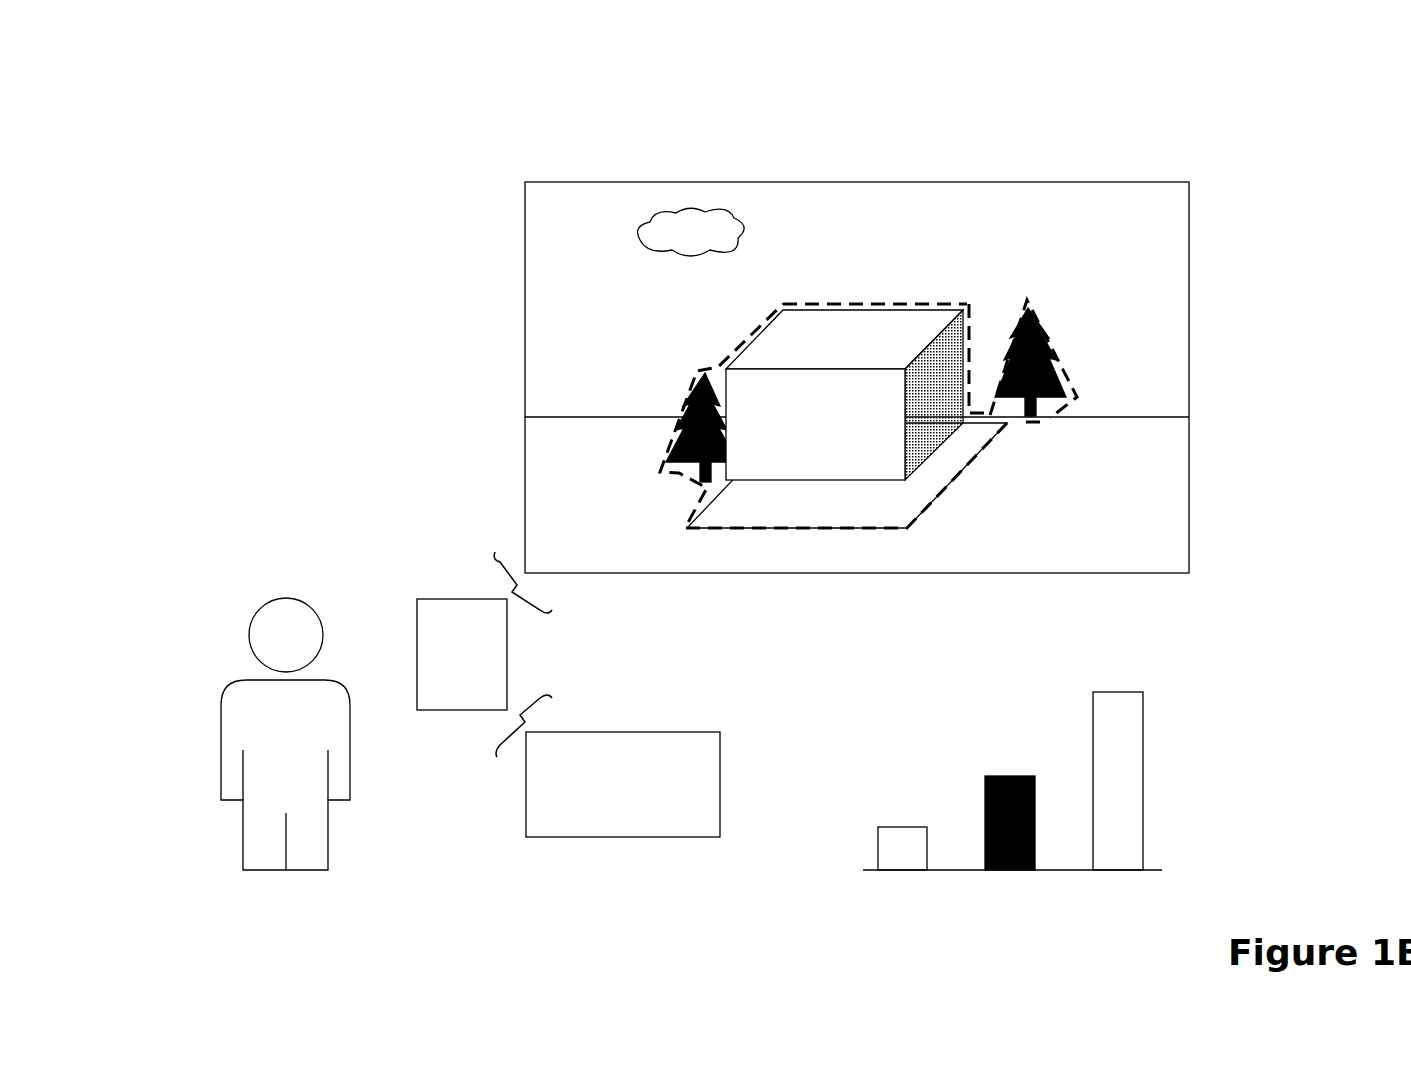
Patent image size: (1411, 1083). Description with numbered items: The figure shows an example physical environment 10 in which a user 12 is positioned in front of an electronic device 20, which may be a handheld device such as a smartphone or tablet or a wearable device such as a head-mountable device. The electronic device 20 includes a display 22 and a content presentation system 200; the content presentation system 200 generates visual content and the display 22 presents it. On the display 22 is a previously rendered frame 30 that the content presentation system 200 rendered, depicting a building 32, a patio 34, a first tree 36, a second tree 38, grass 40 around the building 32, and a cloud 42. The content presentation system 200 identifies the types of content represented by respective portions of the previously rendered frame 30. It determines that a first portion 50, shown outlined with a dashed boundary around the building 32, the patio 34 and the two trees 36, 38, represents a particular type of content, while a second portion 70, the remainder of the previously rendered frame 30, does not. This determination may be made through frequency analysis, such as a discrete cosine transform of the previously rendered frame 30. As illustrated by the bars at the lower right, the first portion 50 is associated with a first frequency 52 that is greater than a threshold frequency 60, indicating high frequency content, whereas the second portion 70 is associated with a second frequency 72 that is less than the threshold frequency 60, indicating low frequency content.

The physical environment 10 is at (70, 102).
The user 12 is at (328, 832).
The electronic device 20 is at (507, 652).
The display 22 is at (525, 350).
The previously rendered frame 30 is at (561, 216).
The building 32 is at (828, 436).
The patio 34 is at (891, 512).
The first tree 36 is at (676, 449).
The second tree 38 is at (1063, 380).
The grass 40 is at (1183, 561).
The cloud 42 is at (698, 244).
The first portion 50 is at (922, 303).
The first frequency 52 is at (1115, 692).
The threshold frequency 60 is at (1005, 776).
The second portion 70 is at (1172, 202).
The second frequency 72 is at (898, 827).
The content presentation system 200 is at (683, 820).